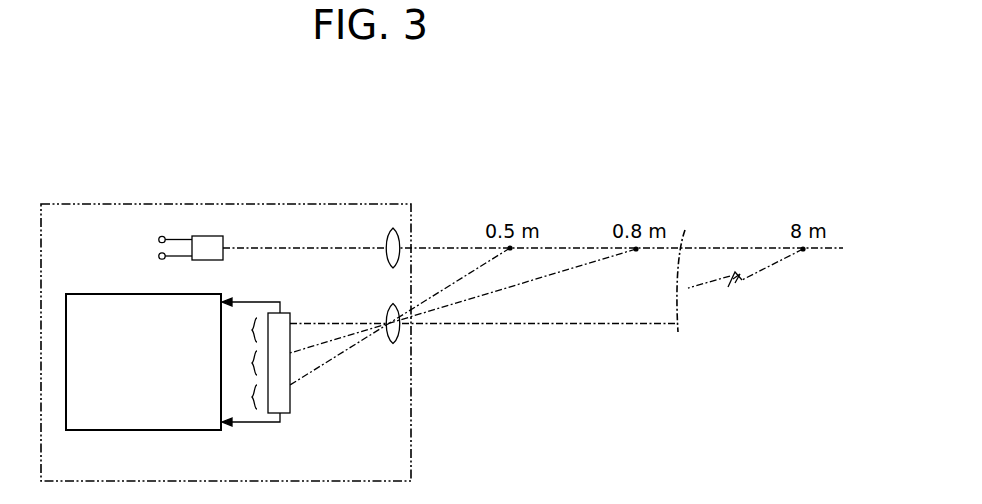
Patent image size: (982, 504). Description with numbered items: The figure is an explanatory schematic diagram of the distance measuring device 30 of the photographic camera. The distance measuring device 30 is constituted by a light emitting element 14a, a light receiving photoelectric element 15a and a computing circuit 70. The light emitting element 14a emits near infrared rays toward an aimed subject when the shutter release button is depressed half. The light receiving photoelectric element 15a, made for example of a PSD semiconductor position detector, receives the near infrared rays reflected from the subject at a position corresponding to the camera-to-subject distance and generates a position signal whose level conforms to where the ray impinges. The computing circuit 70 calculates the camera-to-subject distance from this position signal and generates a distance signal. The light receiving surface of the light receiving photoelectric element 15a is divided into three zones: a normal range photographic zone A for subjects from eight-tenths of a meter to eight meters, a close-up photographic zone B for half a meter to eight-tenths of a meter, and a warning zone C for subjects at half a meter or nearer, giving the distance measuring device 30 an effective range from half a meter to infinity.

The distance measuring device 30 is at (363, 204).
The light emitting element 14a is at (213, 236).
The light receiving photoelectric element 15a is at (290, 400).
The computing circuit 70 is at (116, 294).